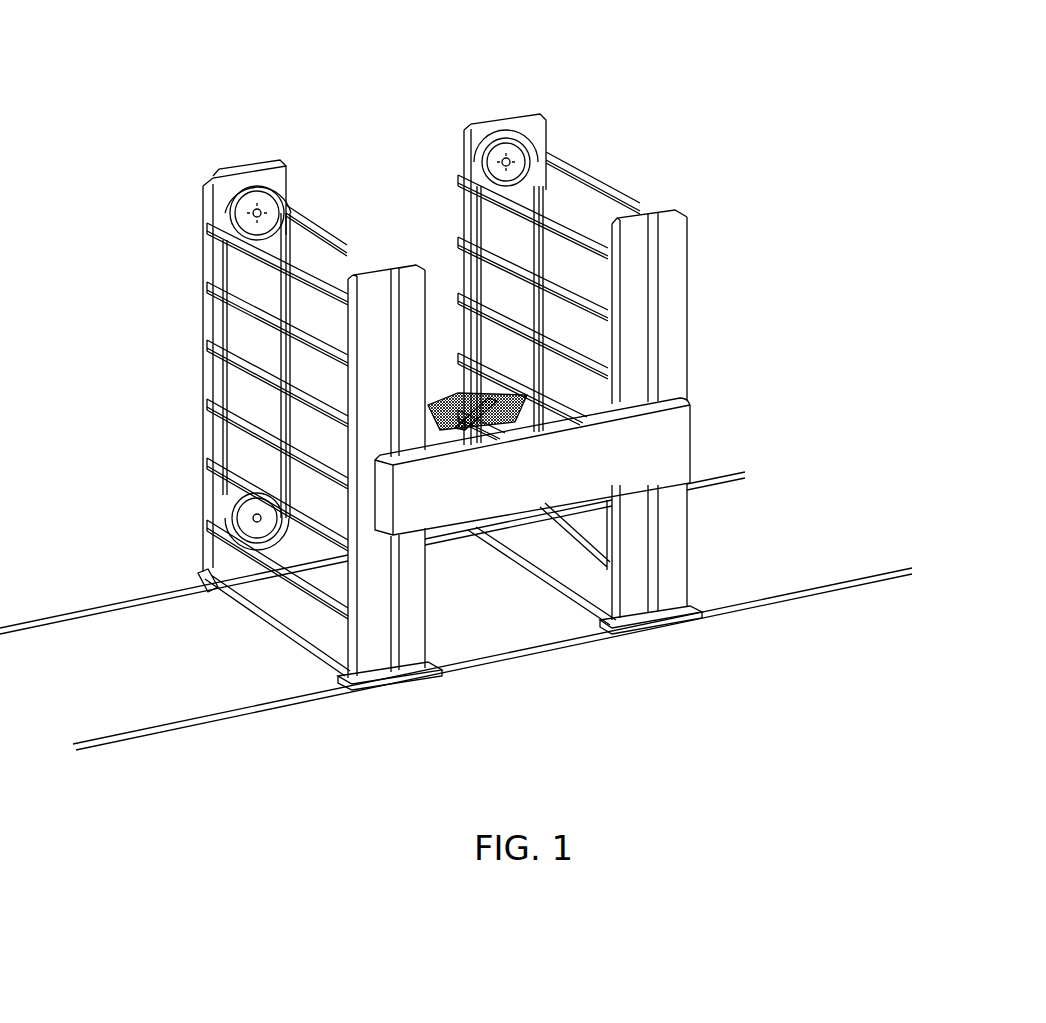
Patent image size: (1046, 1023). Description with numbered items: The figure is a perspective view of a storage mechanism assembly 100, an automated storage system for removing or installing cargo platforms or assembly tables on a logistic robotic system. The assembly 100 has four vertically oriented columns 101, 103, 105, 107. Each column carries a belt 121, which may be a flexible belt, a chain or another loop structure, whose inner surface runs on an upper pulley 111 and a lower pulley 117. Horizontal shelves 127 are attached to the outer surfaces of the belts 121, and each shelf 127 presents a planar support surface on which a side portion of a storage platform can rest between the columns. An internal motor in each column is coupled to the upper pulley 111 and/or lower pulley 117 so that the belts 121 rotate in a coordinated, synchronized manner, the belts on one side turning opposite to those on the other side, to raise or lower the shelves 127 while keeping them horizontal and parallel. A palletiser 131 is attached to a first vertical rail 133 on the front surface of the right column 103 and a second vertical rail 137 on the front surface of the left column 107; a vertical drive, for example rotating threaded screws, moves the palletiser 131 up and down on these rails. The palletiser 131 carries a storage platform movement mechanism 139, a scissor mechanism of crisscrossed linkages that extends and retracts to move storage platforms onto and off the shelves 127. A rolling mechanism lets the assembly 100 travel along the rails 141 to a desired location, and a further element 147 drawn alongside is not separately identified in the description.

The storage mechanism assembly 100 is at (236, 58).
The vertically oriented column 101 is at (536, 118).
The right column 103 is at (668, 252).
The vertically oriented column 105 is at (253, 171).
The left column 107 is at (413, 657).
The upper pulley 111 is at (250, 208).
The lower pulley 117 is at (253, 517).
The belt 121 is at (228, 312).
The horizontal shelf 127 is at (238, 412).
The palletiser 131 is at (643, 438).
The first vertical rail 133 is at (653, 317).
The second vertical rail 137 is at (400, 628).
The storage platform movement mechanism 139 is at (455, 403).
The rails 141 is at (697, 489).
The front floor rail 147 is at (536, 647).